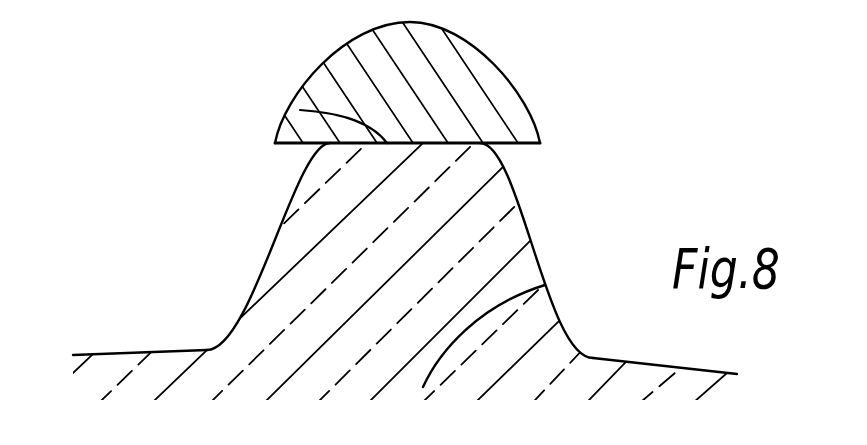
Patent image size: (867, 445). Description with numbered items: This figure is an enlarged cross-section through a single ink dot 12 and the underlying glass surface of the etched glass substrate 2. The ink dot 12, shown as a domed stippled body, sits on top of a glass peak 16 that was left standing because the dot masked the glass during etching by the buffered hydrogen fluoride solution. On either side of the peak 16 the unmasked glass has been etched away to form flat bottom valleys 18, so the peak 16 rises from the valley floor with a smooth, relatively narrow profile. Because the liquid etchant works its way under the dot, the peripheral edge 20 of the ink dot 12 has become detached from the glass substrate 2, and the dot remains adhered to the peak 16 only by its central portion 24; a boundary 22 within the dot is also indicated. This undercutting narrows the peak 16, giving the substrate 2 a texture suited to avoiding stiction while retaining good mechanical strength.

The glass substrate 2 is at (545, 285).
The ink dot 12 is at (510, 110).
The glass peak 16 is at (473, 222).
The flat bottom valley 18 is at (210, 337).
The peripheral edge 20 is at (535, 146).
The core region 22 is at (300, 110).
The central portion 24 is at (420, 118).